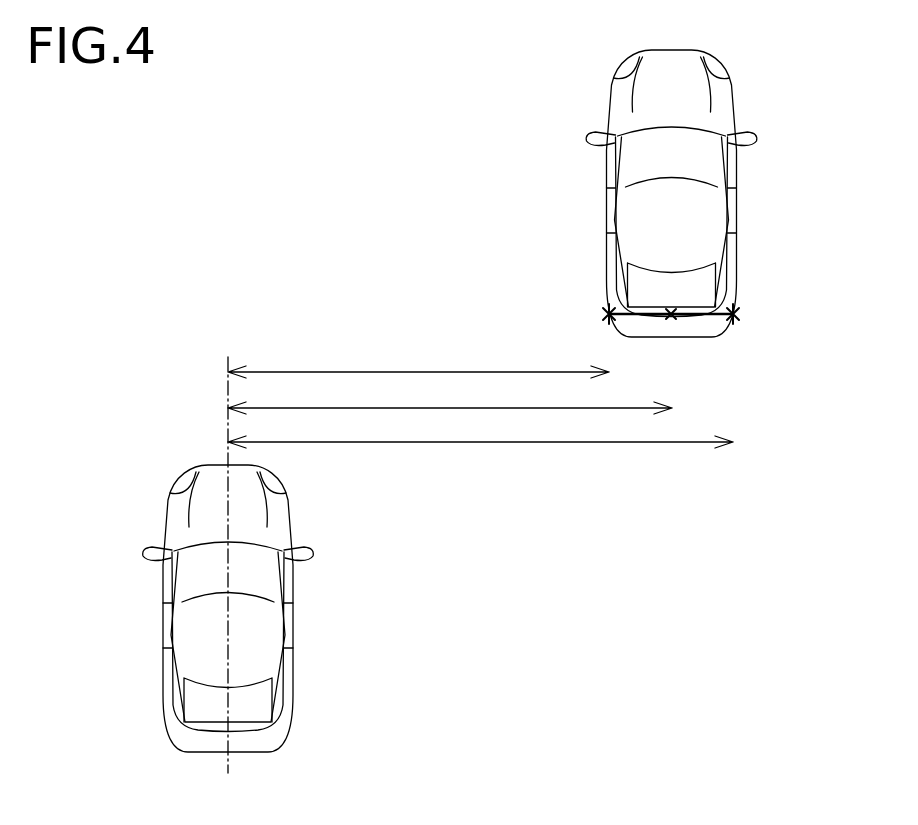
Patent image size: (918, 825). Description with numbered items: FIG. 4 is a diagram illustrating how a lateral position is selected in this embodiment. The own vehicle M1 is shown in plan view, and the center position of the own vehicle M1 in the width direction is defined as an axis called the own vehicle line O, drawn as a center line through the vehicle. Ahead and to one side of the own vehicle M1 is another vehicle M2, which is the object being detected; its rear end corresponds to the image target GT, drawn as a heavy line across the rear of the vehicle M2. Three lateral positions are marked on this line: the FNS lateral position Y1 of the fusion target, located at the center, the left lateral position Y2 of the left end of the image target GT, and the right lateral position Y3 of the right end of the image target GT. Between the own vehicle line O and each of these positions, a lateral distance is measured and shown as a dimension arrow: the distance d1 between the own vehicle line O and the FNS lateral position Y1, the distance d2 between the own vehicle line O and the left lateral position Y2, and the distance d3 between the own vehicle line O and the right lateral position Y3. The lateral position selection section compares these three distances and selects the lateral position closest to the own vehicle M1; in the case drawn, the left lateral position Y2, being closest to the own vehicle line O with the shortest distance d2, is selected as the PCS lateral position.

The own vehicle M1 is at (165, 509).
The other vehicle M2 is at (737, 95).
The image target GT is at (690, 313).
The own vehicle line O is at (230, 767).
The FNS lateral position Y1 is at (672, 418).
The left lateral position Y2 is at (609, 382).
The right lateral position Y3 is at (733, 453).
The distance between the own vehicle line and the FNS lateral position d1 is at (450, 398).
The distance between the own vehicle line and the left lateral position d2 is at (418, 362).
The distance between the own vehicle line and the right lateral position d3 is at (480, 432).